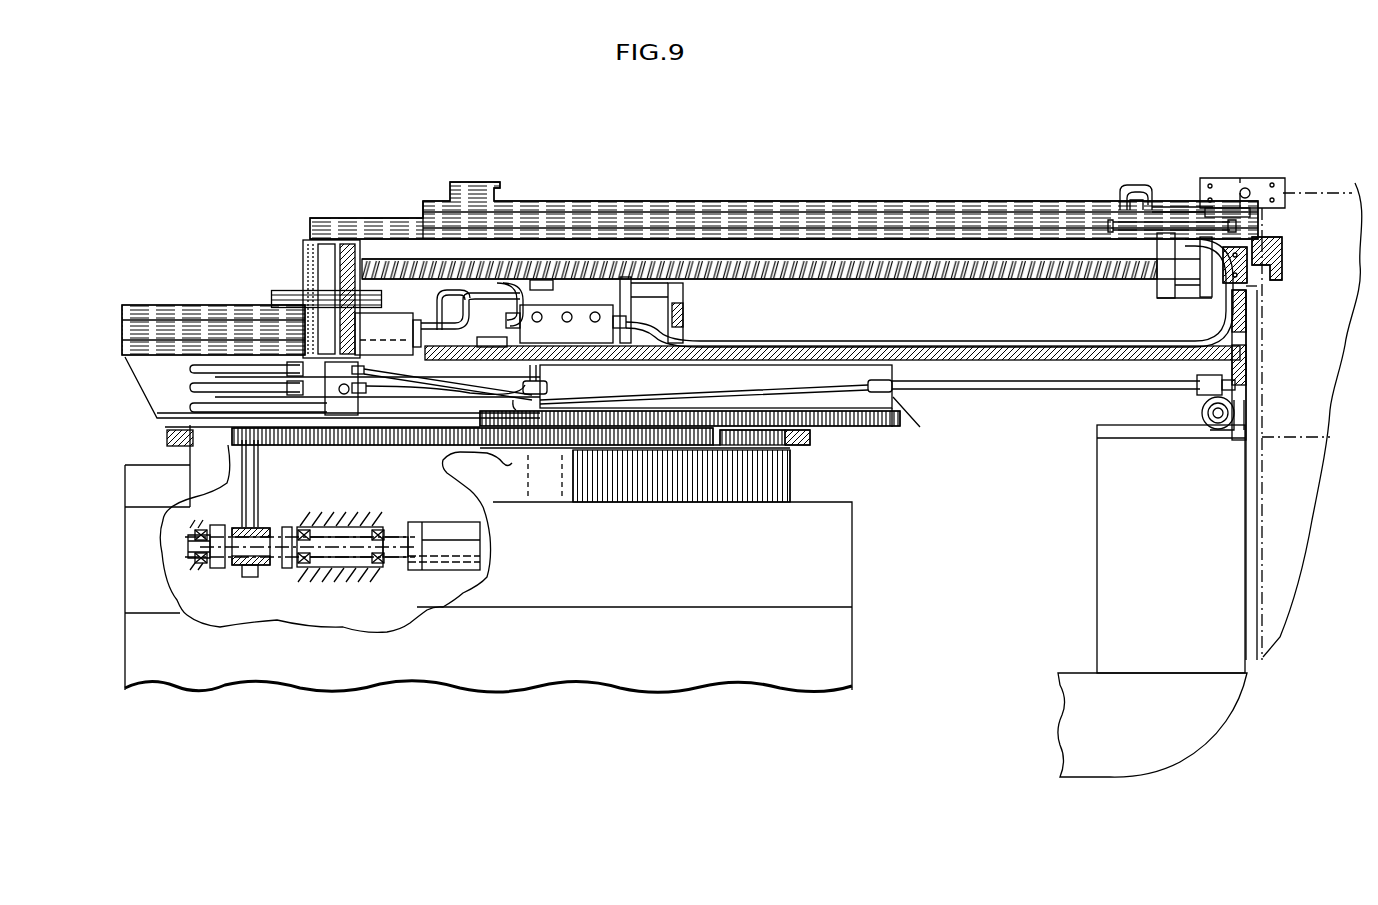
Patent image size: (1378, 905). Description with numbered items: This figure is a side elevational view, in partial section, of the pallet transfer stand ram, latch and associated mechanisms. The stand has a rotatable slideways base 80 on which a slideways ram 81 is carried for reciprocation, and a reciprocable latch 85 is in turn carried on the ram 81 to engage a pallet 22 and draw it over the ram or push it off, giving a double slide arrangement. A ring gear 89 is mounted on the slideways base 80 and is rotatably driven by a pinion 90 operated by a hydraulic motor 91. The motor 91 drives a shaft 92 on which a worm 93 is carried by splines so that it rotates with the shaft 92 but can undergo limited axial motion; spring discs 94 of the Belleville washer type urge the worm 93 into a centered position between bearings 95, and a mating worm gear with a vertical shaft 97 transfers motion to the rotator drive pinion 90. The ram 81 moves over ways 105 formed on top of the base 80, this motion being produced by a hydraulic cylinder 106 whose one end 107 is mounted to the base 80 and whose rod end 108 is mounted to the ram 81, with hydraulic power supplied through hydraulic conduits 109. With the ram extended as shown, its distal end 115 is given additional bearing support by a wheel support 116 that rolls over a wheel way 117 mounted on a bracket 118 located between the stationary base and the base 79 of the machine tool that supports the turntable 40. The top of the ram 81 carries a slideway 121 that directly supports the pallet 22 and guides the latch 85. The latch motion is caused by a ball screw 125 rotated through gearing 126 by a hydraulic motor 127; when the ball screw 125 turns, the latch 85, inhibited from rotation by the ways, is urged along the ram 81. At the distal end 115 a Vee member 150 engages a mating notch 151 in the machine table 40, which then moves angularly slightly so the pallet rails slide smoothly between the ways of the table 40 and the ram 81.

The pallet 22 is at (1355, 178).
The machine table 40 is at (1338, 347).
The base of the machine tool 79 is at (1286, 568).
The rotatable slideways base 80 is at (262, 307).
The slideways ram 81 is at (763, 183).
The reciprocable latch 85 is at (1252, 176).
The ring gear 89 is at (488, 558).
The pinion 90 is at (218, 428).
The hydraulic motor 91 is at (446, 550).
The shaft 92 is at (345, 545).
The worm 93 is at (266, 530).
The spring discs 94 is at (226, 568).
The bearings 95 is at (202, 568).
The vertical shaft 97 is at (253, 453).
The ways 105 is at (171, 312).
The hydraulic cylinder 106 is at (655, 391).
The end of hydraulic cylinder 107 is at (560, 447).
The rod end 108 is at (1197, 396).
The hydraulic conduits 109 is at (513, 400).
The distal end of the ram 115 is at (1252, 317).
The wheel support 116 is at (1217, 435).
The wheel way 117 is at (1125, 432).
The bracket 118 is at (1162, 728).
The slideway 121 is at (906, 213).
The ball screw 125 is at (993, 257).
The gearing 126 is at (320, 266).
The hydraulic motor 127 is at (382, 341).
The Vee member 150 is at (1280, 235).
The notch 151 is at (1284, 248).